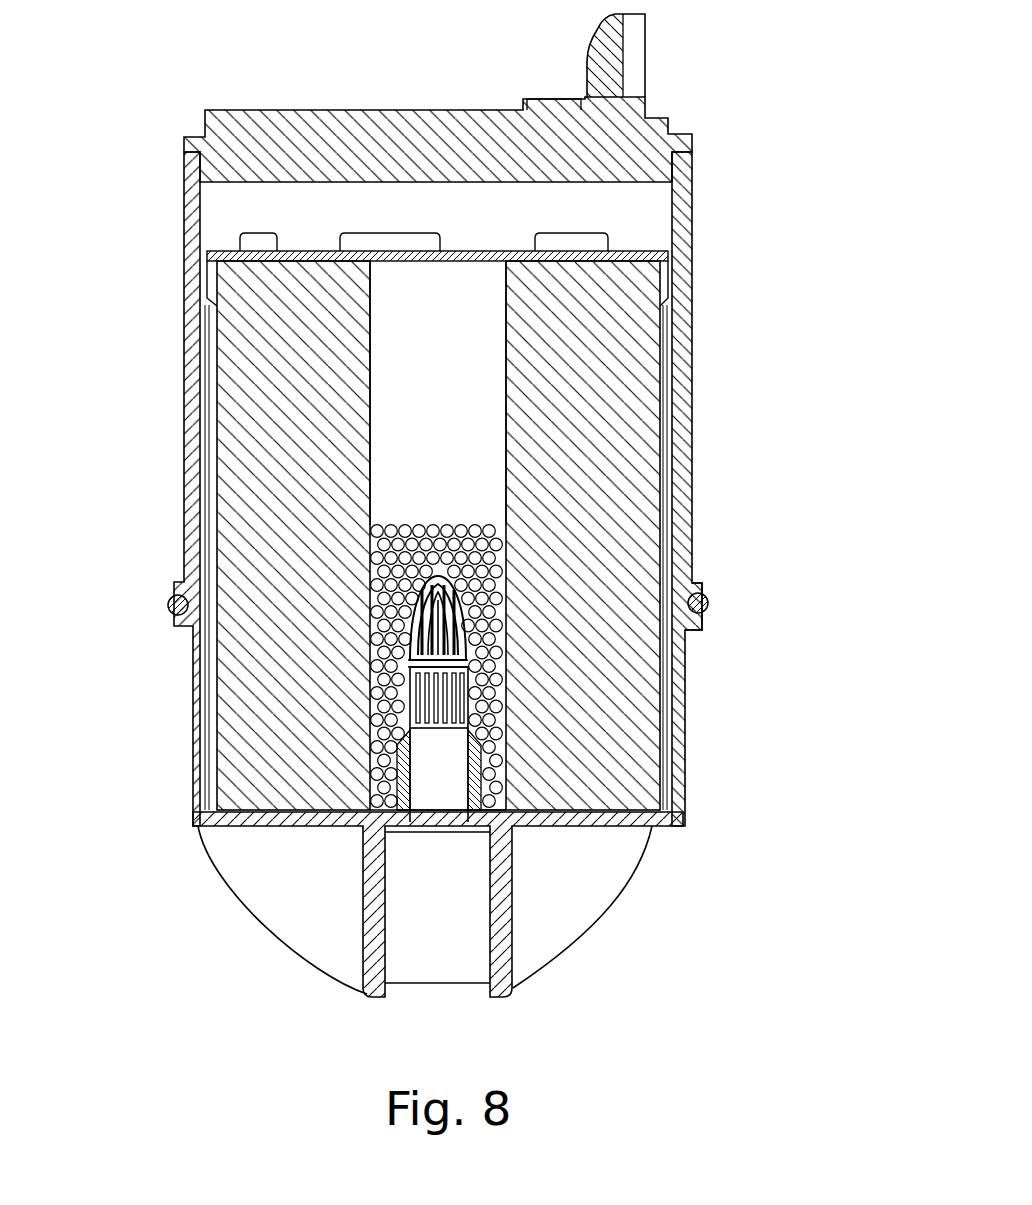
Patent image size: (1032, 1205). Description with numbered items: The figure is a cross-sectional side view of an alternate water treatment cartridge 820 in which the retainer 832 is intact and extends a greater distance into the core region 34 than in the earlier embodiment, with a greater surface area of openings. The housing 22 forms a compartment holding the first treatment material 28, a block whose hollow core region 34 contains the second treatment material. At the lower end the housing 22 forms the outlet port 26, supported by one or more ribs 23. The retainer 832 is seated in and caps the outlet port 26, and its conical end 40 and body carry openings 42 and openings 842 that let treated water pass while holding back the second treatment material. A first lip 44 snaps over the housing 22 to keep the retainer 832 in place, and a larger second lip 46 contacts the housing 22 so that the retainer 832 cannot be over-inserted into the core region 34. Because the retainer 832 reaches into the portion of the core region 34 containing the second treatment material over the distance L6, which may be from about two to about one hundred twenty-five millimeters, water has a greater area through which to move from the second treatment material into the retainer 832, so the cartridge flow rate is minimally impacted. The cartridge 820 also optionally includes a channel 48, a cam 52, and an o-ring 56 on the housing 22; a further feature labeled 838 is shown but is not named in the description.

The housing 22 is at (690, 238).
The ribs 23 is at (565, 937).
The outlet port 26 is at (457, 960).
The first treatment material 28 is at (615, 420).
The core region 34 is at (450, 347).
The conical end 40 is at (455, 598).
The openings 42 is at (467, 632).
The first lip 44 is at (452, 735).
The second lip 46 is at (470, 840).
The channel 48 is at (462, 672).
The cam 52 is at (640, 38).
The o-ring 56 is at (710, 606).
The water treatment cartridge 820 is at (722, 88).
The retainer 832 is at (480, 713).
The piston lower plate 838 is at (472, 608).
The openings 842 is at (702, 594).
The distance L6 is at (370, 577).